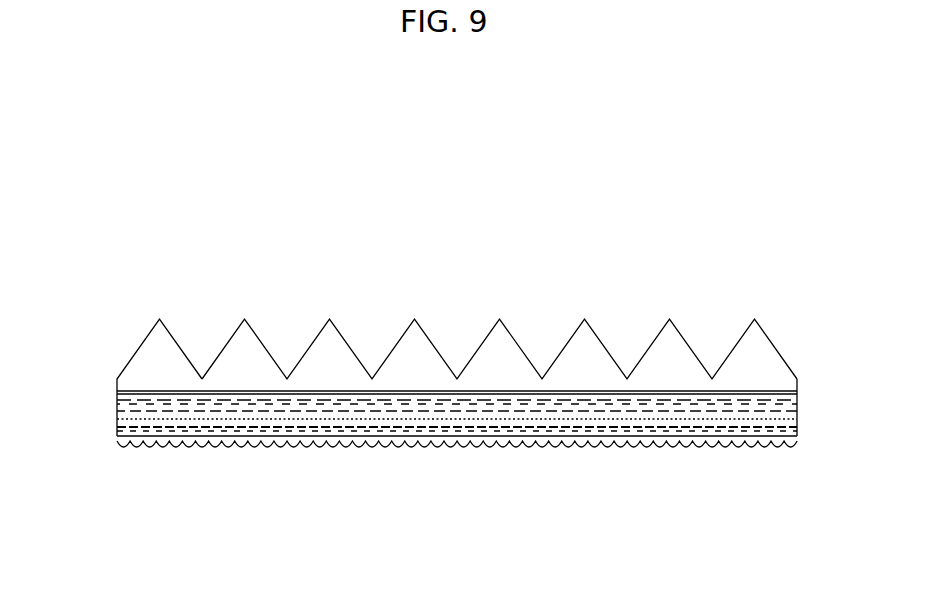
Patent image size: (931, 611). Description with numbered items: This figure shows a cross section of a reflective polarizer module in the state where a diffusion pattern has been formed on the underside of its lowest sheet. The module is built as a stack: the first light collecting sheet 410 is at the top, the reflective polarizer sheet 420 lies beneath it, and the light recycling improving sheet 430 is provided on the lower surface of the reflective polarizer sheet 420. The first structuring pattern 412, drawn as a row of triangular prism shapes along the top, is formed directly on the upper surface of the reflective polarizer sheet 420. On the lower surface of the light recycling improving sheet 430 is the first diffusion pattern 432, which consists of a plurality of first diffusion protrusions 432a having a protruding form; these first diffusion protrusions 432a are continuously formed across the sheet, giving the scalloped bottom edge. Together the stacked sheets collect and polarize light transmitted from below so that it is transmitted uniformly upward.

The first light collecting sheet 410 is at (112, 378).
The first structuring pattern 412 is at (763, 370).
The reflective polarizer sheet 420 is at (124, 405).
The light recycling improving sheet 430 is at (124, 432).
The first diffusion pattern 432 is at (217, 525).
The first diffusion protrusions 432a is at (142, 450).